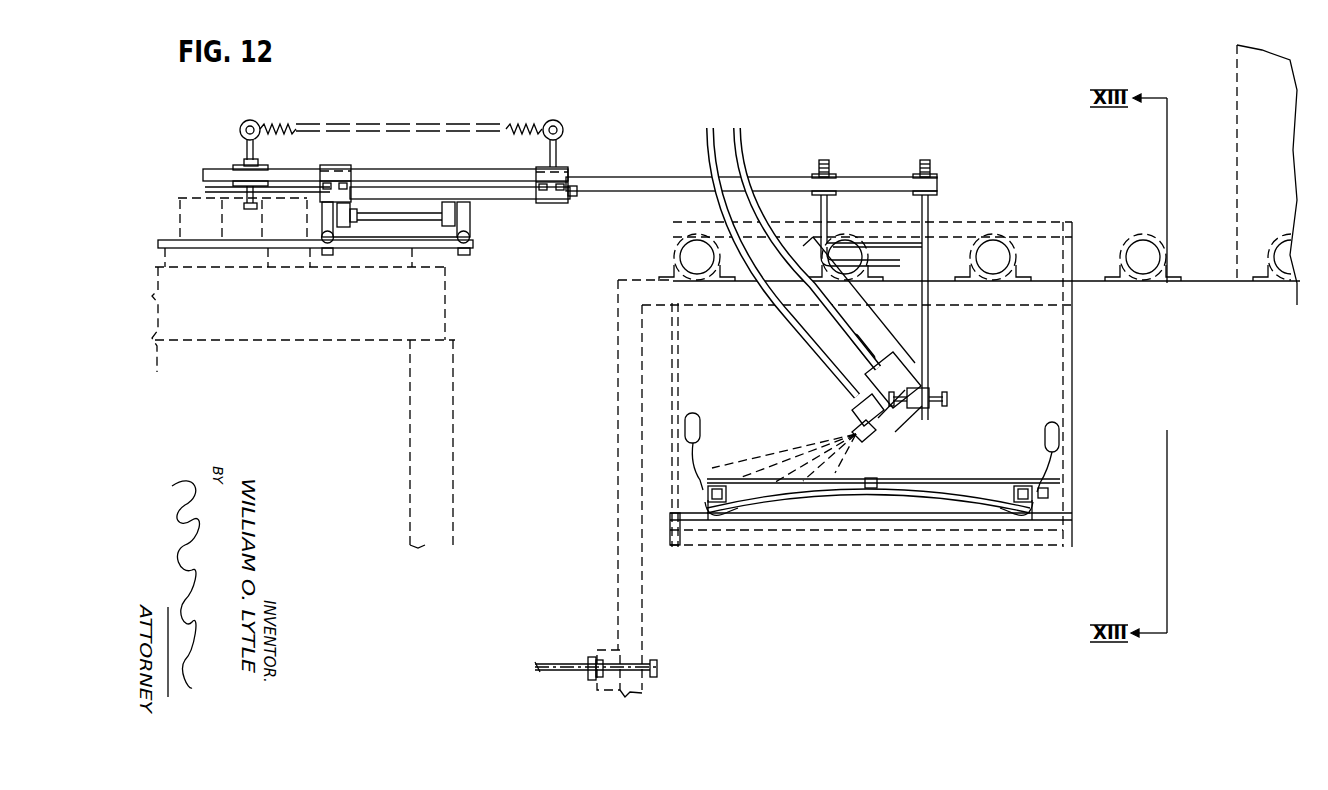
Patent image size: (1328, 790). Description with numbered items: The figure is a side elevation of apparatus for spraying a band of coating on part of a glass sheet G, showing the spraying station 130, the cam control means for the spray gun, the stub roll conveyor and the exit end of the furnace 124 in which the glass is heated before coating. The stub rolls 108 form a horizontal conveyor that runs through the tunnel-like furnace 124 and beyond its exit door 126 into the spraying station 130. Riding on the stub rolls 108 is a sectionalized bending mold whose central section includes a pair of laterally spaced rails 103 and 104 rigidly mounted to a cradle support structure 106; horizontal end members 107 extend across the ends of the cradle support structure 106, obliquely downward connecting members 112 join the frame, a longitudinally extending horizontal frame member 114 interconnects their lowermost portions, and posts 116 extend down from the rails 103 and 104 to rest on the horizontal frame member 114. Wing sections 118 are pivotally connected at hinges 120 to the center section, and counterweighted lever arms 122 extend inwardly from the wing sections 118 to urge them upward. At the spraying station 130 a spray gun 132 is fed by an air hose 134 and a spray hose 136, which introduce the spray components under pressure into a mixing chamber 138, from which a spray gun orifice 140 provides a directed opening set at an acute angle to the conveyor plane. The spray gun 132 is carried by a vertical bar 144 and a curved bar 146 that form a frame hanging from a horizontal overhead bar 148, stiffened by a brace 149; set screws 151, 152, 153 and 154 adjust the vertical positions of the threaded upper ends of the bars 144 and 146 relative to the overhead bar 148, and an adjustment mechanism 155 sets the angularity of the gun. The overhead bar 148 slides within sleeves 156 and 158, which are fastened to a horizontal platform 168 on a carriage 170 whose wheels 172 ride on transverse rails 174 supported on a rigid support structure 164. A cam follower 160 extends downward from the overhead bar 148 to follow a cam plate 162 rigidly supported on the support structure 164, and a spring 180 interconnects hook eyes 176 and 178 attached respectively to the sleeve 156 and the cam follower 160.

The rail 103 is at (728, 488).
The rail 104 is at (1012, 488).
The cradle support structure 106 is at (1078, 388).
The horizontal end member 107 is at (1010, 222).
The stub rolls 108 is at (1010, 258).
The connecting member 112 is at (677, 354).
The horizontal frame member 114 is at (672, 536).
The posts 116 is at (1034, 510).
The wing sections 118 is at (911, 494).
The hinges 120 is at (1052, 494).
The counterweighted lever arms 122 is at (699, 458).
The furnace 124 is at (1232, 82).
The exit door 126 is at (1237, 163).
The spraying station 130 is at (773, 272).
The spray gun 132 is at (852, 403).
The air hose 134 is at (708, 130).
The spray hose 136 is at (739, 129).
The mixing chamber 138 is at (892, 412).
The spray gun orifice 140 is at (852, 425).
The vertical bar 144 is at (929, 333).
The curved bar 146 is at (880, 325).
The horizontal overhead bar 148 is at (883, 178).
The brace 149 is at (893, 247).
The set screw 151 is at (930, 171).
The set screw 152 is at (937, 193).
The set screw 153 is at (829, 170).
The set screw 154 is at (830, 195).
The adjustment mechanism 155 is at (929, 394).
The sleeve 156 is at (537, 170).
The sleeve 158 is at (350, 171).
The cam follower 160 is at (265, 191).
The cam plate 162 is at (210, 200).
The rigid support structure 164 is at (474, 246).
The horizontal platform 168 is at (503, 200).
The carriage 170 is at (431, 188).
The wheels 172 is at (322, 222).
The rails 174 is at (440, 237).
The hook eye 176 is at (556, 121).
The hook eye 178 is at (251, 120).
The spring 180 is at (297, 125).
The glass sheet G is at (946, 481).